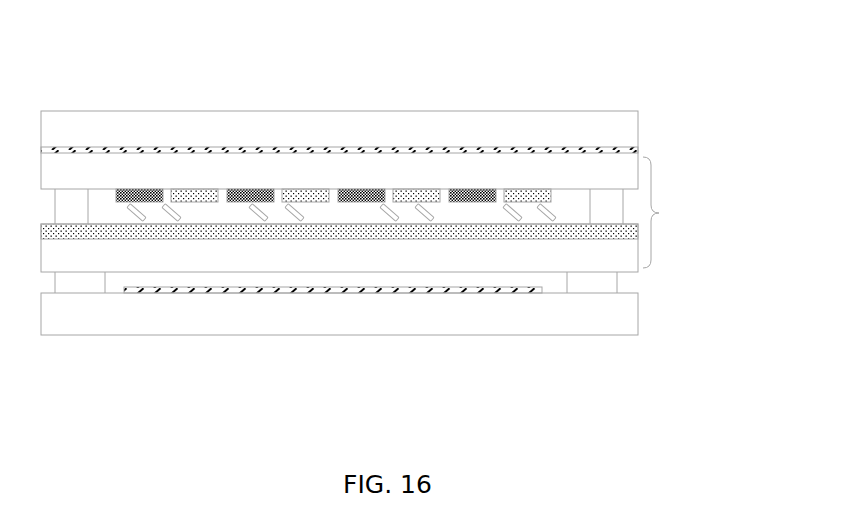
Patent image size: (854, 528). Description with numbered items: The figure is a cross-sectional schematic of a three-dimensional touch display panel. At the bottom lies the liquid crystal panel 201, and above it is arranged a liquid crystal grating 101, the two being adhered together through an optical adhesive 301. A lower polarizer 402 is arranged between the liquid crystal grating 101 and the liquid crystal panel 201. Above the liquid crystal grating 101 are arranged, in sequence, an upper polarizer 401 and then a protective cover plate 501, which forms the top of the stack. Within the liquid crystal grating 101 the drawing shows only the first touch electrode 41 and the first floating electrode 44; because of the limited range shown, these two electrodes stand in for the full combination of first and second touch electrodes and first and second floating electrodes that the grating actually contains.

The liquid crystal grating 101 is at (681, 212).
The protective cover plate 501 is at (548, 122).
The upper polarizer 401 is at (458, 150).
The first touch electrode 41 is at (140, 190).
The first floating electrode 44 is at (198, 198).
The liquid crystal panel 201 is at (465, 327).
The lower polarizer 402 is at (512, 292).
The optical adhesive 301 is at (599, 280).